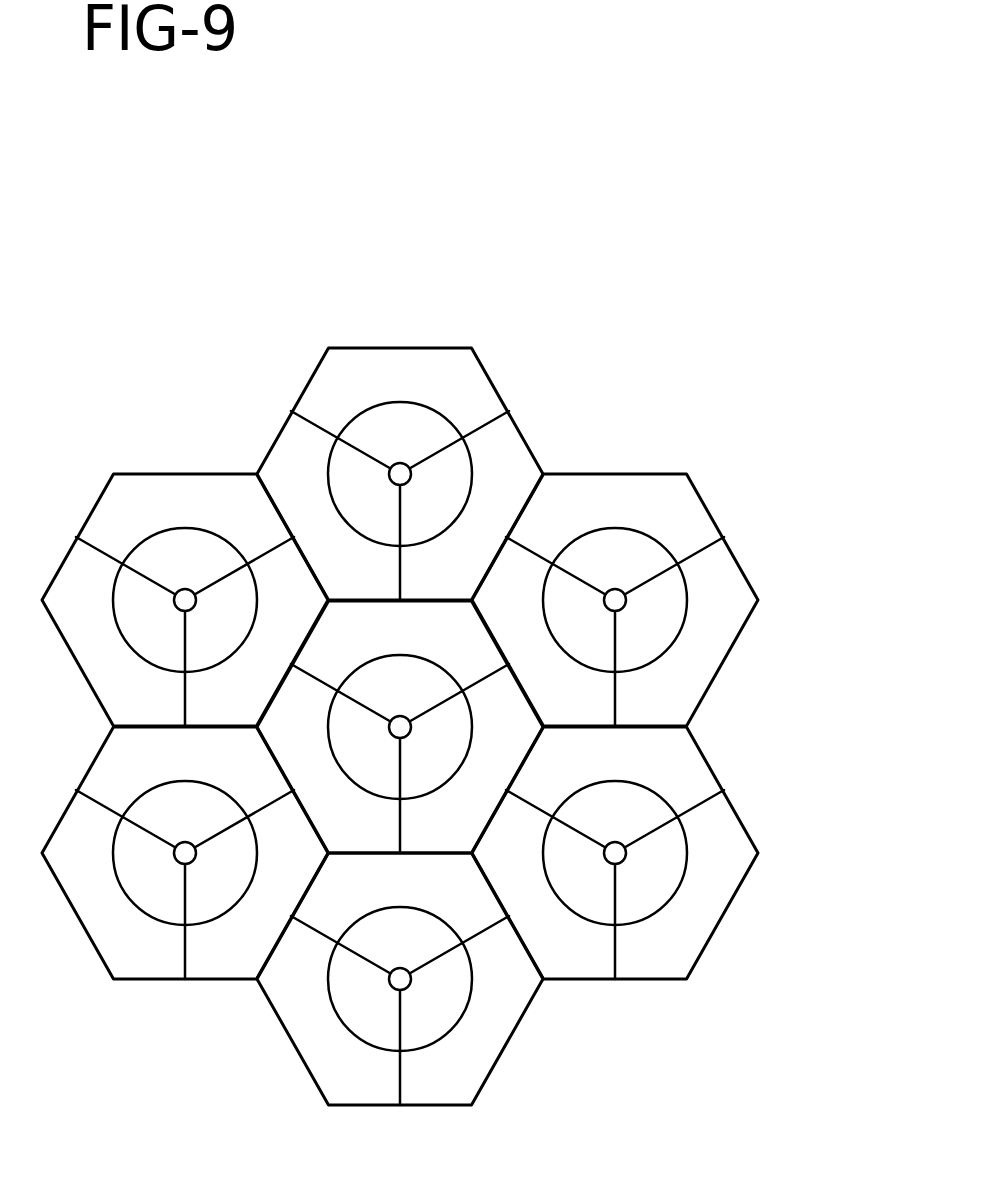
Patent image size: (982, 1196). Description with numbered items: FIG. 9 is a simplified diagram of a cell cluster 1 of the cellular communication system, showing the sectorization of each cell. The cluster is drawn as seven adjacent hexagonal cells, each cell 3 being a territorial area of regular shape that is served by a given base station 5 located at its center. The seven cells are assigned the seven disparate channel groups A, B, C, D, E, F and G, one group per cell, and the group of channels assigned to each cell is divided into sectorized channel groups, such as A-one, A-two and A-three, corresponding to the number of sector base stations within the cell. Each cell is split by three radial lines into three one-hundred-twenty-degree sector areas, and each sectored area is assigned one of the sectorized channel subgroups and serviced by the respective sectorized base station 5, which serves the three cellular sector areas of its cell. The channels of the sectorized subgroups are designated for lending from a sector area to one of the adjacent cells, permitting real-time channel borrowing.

The cellular radio system / cell cluster 1 is at (594, 190).
The cell 3 is at (338, 320).
The base station 5 is at (411, 472).